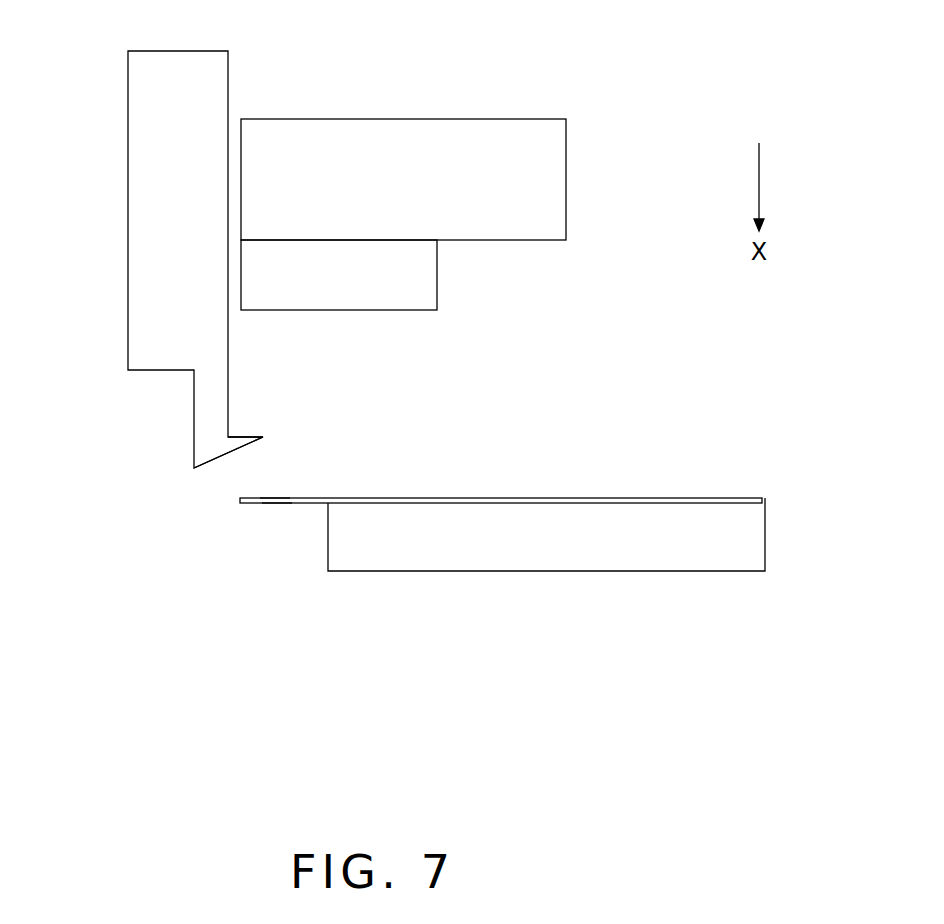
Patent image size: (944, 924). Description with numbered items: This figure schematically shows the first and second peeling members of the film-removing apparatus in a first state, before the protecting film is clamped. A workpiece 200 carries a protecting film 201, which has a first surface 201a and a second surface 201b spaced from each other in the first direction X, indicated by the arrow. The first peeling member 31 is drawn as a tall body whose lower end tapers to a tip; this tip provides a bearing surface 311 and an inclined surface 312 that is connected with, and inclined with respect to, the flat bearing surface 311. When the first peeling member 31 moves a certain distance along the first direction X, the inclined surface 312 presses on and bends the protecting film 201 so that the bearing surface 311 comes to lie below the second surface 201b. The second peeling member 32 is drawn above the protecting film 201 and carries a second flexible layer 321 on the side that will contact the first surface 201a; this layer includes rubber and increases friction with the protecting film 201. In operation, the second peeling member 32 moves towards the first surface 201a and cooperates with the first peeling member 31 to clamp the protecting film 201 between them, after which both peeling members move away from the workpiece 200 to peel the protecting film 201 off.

The first peeling member 31 is at (145, 275).
The bearing surface 311 is at (233, 437).
The inclined surface 312 is at (222, 456).
The second peeling member 32 is at (534, 140).
The second flexible layer 321 is at (422, 283).
The workpiece 200 is at (552, 555).
The protecting film 201 is at (304, 500).
The first surface 201a is at (273, 498).
The second surface 201b is at (278, 504).